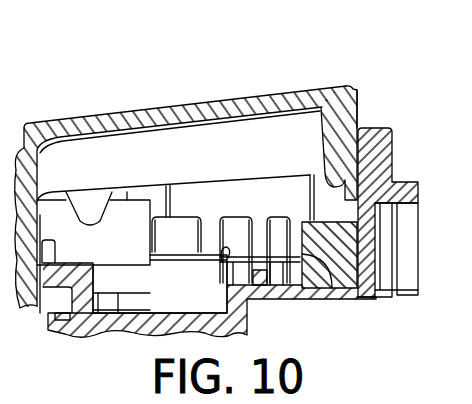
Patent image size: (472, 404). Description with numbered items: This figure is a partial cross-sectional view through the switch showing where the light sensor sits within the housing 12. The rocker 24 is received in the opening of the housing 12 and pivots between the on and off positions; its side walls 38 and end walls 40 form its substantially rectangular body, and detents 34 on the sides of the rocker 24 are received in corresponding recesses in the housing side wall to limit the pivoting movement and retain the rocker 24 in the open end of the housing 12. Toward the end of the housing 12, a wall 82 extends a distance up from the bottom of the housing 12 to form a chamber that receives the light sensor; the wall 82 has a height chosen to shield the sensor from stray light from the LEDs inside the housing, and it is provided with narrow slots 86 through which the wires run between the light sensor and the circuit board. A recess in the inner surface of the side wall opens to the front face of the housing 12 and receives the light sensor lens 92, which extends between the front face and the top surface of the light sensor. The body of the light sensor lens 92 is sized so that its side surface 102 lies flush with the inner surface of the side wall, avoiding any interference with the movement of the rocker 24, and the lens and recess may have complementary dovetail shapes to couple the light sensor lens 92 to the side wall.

The housing 12 is at (404, 137).
The rocker 24 is at (352, 85).
The detents 34 is at (90, 222).
The side walls 38 is at (217, 153).
The end walls 40 is at (360, 104).
The wall 82 is at (168, 232).
The narrow slots 86 is at (329, 291).
The light sensor lens 92 is at (322, 194).
The side surface 102 is at (256, 198).